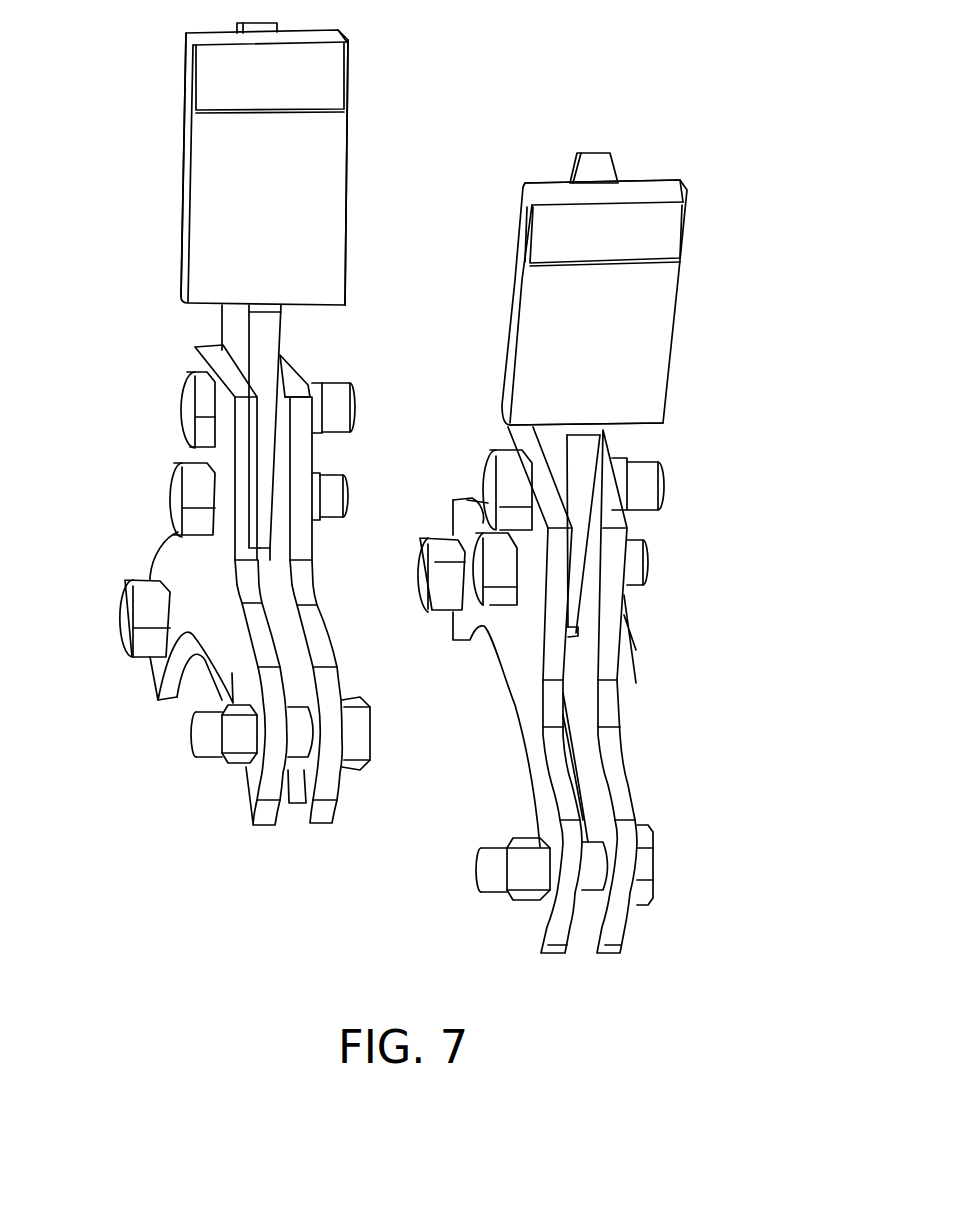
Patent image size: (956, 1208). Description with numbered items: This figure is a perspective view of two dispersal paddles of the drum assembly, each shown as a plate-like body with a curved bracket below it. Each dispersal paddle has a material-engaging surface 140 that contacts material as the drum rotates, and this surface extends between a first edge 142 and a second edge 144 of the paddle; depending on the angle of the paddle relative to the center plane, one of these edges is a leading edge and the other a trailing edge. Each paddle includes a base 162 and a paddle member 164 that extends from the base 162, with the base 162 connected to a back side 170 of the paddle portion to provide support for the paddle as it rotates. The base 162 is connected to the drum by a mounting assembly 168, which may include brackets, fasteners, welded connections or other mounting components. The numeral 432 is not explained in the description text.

The dispersal paddle material-engaging surface 140 is at (283, 148).
The upper window portion of housing 432 is at (348, 133).
The first edge 142 is at (185, 200).
The second edge 144 is at (345, 258).
The base 162 is at (230, 333).
The back side 170 is at (666, 177).
The paddle member 164 is at (665, 408).
The mounting assembly 168 is at (688, 591).